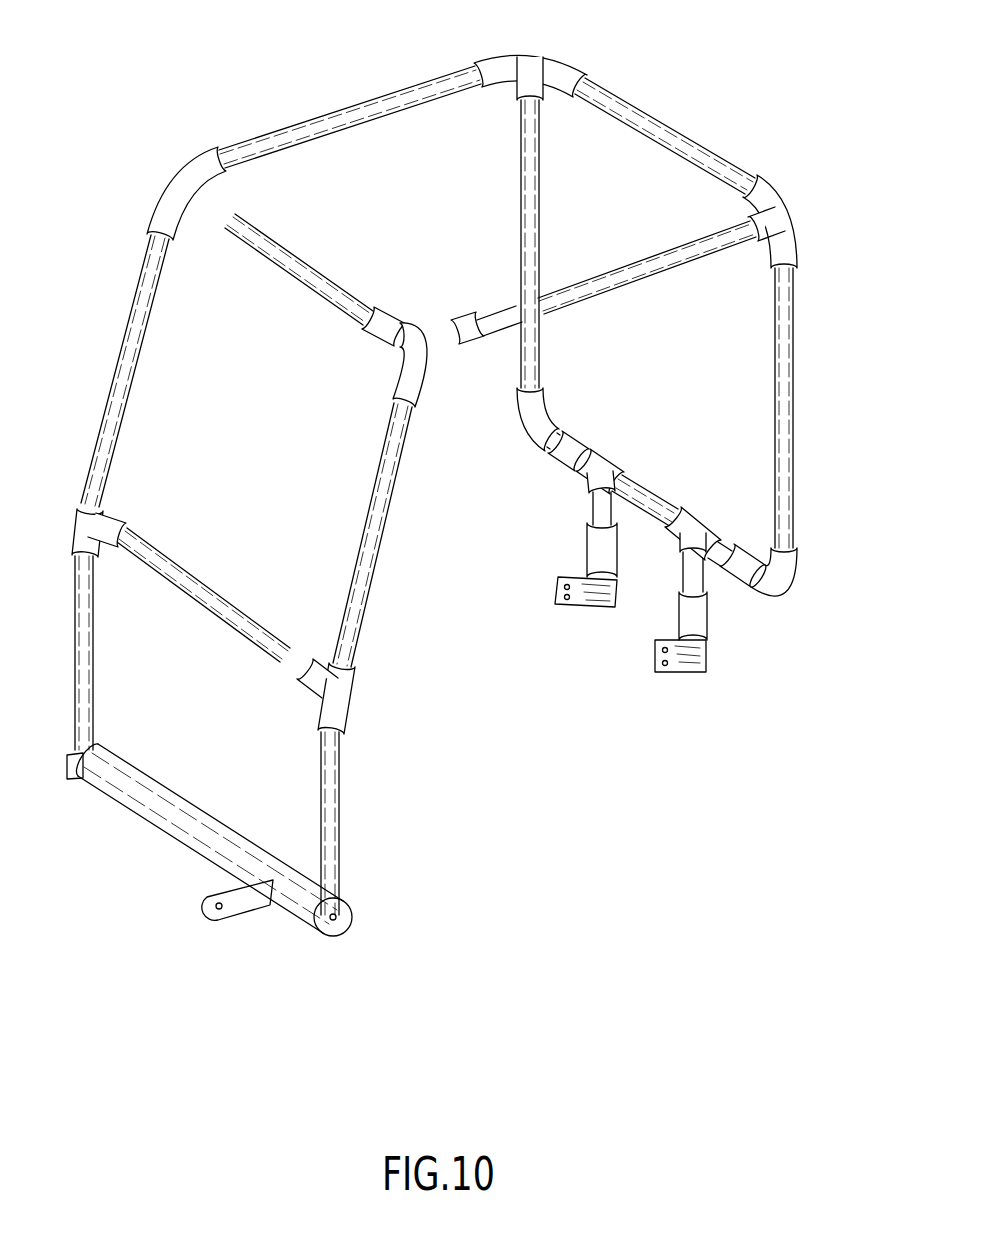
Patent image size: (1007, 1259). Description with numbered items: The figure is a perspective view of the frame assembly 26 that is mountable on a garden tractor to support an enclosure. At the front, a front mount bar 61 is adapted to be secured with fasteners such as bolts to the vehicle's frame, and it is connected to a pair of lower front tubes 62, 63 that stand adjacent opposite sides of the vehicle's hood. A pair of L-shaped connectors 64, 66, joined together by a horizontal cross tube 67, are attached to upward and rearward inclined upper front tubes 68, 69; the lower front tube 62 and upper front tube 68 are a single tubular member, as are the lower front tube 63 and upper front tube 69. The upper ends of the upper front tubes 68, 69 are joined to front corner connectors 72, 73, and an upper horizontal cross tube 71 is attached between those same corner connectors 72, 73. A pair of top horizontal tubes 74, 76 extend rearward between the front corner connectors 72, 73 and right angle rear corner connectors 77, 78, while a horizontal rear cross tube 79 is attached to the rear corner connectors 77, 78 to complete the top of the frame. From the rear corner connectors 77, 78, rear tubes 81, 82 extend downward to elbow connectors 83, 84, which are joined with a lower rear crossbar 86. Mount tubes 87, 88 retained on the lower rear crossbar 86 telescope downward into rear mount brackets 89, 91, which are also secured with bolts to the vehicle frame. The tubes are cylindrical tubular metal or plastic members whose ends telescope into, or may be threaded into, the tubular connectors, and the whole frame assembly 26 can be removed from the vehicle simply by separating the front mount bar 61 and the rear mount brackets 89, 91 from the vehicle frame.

The frame assembly 26 is at (650, 61).
The front mount bar 61 is at (168, 822).
The lower front tube 62 is at (94, 695).
The lower front tube 63 is at (333, 812).
The L-shaped connector 64 is at (82, 527).
The L-shaped connector 66 is at (348, 700).
The horizontal cross tube 67 is at (228, 622).
The upper front tube 68 is at (116, 367).
The upper front tube 69 is at (381, 530).
The upper horizontal cross tube 71 is at (277, 267).
The front corner connector 72 is at (155, 194).
The front corner connector 73 is at (419, 395).
The top horizontal tube 74 is at (345, 106).
The top horizontal tube 76 is at (622, 293).
The right angle rear corner connector 77 is at (514, 50).
The right angle rear corner connector 78 is at (775, 191).
The horizontal rear cross tube 79 is at (668, 139).
The rear tube 81 is at (541, 222).
The rear tube 82 is at (796, 373).
The elbow connector 83 is at (550, 439).
The elbow connector 84 is at (794, 574).
The lower rear crossbar 86 is at (648, 493).
The mount tube 87 is at (598, 505).
The mount tube 88 is at (699, 581).
The rear mount bracket 89 is at (584, 598).
The rear mount bracket 91 is at (681, 665).